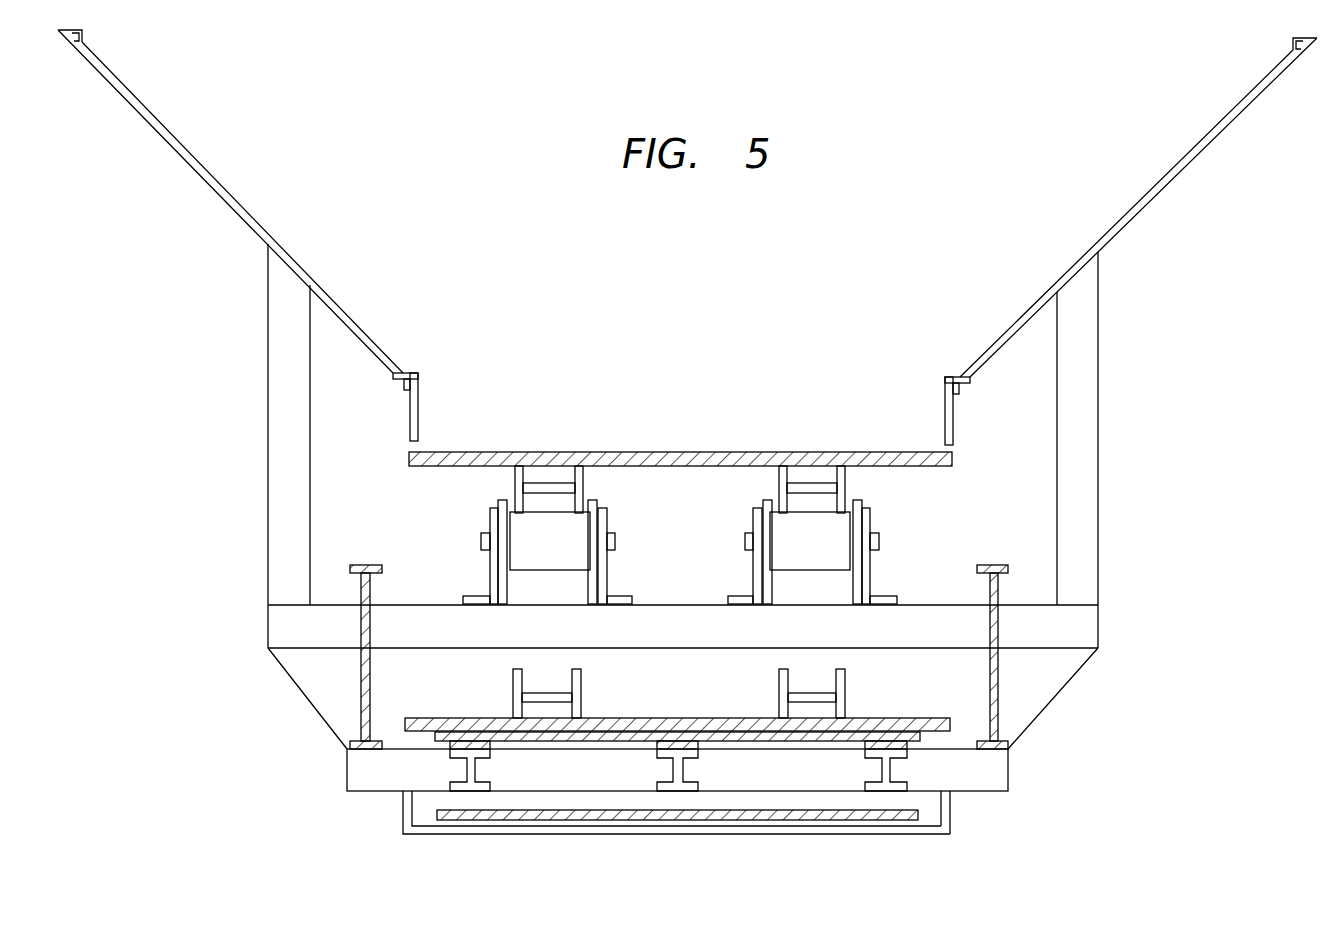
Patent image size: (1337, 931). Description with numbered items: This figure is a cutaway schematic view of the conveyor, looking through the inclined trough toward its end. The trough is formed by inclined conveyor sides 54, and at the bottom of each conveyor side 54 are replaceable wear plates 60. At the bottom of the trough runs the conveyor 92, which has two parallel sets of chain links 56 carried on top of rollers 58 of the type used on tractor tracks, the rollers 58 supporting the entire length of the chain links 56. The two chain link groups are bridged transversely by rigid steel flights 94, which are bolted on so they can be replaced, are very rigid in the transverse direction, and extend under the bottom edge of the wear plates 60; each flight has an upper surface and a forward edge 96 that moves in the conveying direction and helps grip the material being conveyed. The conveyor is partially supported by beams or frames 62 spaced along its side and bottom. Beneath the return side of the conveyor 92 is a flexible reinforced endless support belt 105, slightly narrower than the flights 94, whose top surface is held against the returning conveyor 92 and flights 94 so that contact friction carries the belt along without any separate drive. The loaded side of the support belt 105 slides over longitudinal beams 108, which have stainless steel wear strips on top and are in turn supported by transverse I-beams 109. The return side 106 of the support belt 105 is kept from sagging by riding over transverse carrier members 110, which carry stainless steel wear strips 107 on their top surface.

The conveyor sides 54 is at (172, 133).
The chain links 56 is at (515, 478).
The rollers 58 is at (562, 553).
The replaceable wear plates 60 is at (418, 408).
The beams or frames 62 is at (300, 548).
The conveyor 92 is at (650, 452).
The rigid steel flights 94 is at (647, 717).
The forward edge 96 is at (752, 733).
The support belt 105 is at (442, 748).
The return side 106 is at (471, 821).
The stainless steel wear strips 107 is at (578, 827).
The longitudinal beams 108 is at (660, 740).
The transverse I-beams 109 is at (1008, 775).
The transverse carrier members 110 is at (910, 838).